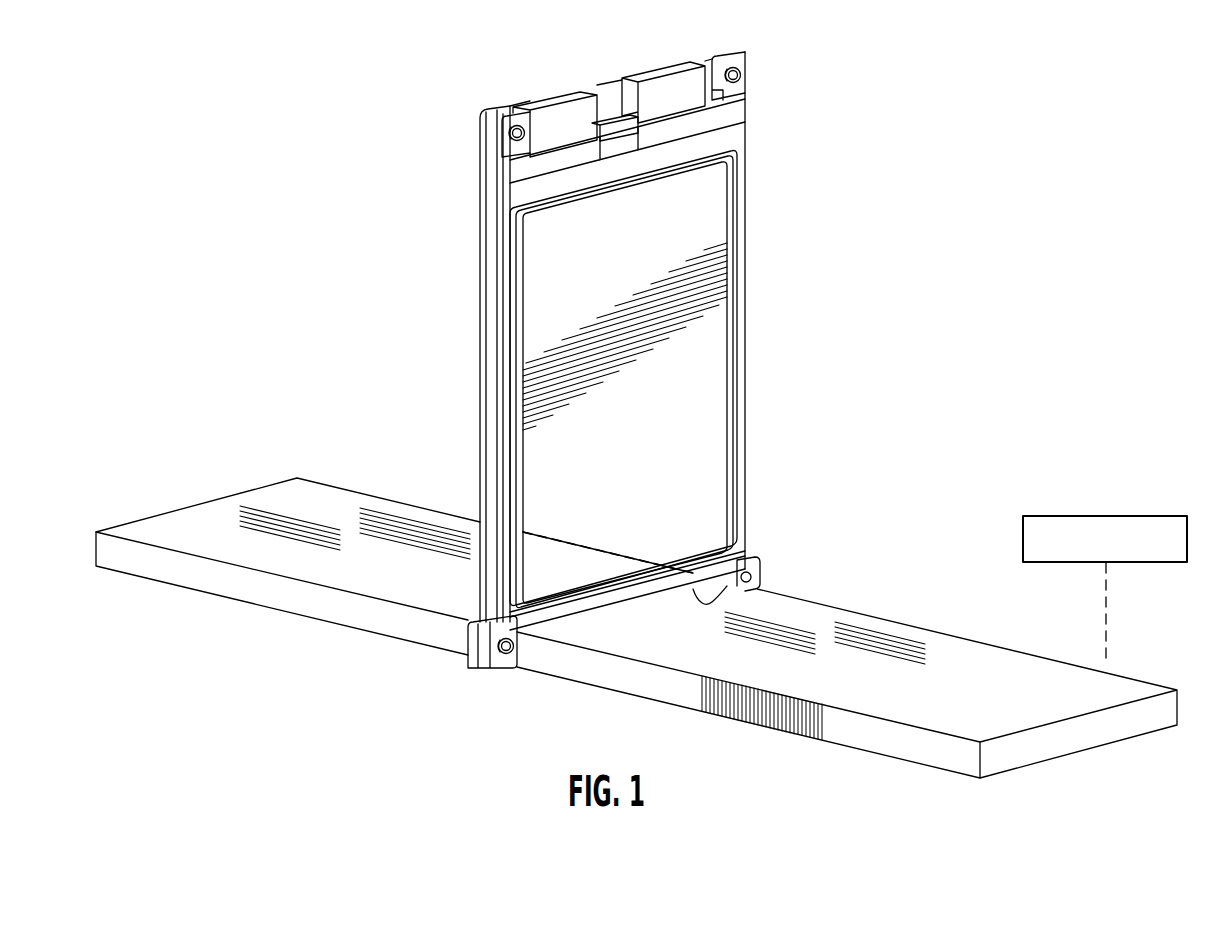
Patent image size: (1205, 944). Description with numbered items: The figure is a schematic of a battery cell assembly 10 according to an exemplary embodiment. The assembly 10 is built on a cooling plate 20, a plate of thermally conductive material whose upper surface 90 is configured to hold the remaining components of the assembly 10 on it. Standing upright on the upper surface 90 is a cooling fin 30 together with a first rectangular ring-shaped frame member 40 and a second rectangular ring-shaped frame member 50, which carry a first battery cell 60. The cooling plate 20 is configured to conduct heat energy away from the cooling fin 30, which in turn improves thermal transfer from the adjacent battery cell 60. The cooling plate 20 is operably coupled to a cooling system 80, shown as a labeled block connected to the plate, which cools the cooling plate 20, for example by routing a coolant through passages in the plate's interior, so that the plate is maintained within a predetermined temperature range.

The battery cell assembly 10 is at (831, 172).
The cooling plate 20 is at (876, 751).
The cooling fin 30 is at (745, 562).
The first rectangular ring-shaped frame member 40 is at (494, 670).
The second rectangular ring-shaped frame member 50 is at (468, 658).
The first battery cell 60 is at (712, 394).
The cooling system 80 is at (1123, 516).
The upper surface 90 is at (825, 622).